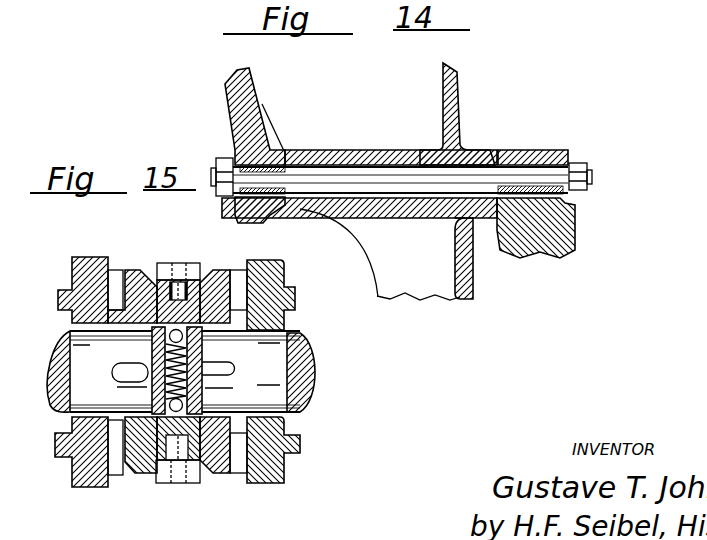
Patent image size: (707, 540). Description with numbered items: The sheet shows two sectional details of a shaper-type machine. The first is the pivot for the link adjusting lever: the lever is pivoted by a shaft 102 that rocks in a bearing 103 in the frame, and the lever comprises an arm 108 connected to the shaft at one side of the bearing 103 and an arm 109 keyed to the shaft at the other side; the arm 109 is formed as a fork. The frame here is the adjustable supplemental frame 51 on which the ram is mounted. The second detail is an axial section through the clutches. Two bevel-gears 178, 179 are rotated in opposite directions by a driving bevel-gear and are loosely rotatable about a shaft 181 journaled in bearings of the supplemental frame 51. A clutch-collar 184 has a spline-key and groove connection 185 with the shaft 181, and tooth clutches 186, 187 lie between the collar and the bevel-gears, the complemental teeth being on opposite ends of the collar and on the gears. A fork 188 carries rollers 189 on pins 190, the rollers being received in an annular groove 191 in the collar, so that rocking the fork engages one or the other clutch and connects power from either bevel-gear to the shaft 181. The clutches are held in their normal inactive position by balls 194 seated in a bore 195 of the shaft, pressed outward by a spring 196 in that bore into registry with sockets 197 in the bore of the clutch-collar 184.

In FIG. 14, the supplemental frame 51 is at (458, 108).
In FIG. 14, the shaft 102 is at (302, 173).
In FIG. 14, the bearing 103 is at (369, 151).
In FIG. 14, the arm 108 is at (249, 106).
In FIG. 14, the arm 109 is at (578, 228).
In FIG. 15, the bevel-gear 178 is at (285, 465).
In FIG. 15, the bevel-gear 179 is at (82, 478).
In FIG. 15, the shaft 181 is at (315, 361).
In FIG. 15, the clutch-collar 184 is at (240, 269).
In FIG. 15, the spline-key and groove connection 185 is at (247, 366).
In FIG. 15, the clutch 186 is at (253, 261).
In FIG. 15, the clutch 187 is at (116, 268).
In FIG. 15, the fork 188 is at (193, 263).
In FIG. 15, the rollers 189 is at (141, 269).
In FIG. 15, the pins 190 is at (176, 262).
In FIG. 15, the annular groove 191 is at (215, 268).
In FIG. 15, the balls 194 is at (155, 352).
In FIG. 15, the bore 195 is at (162, 376).
In FIG. 15, the spring 196 is at (197, 352).
In FIG. 15, the sockets 197 is at (207, 471).